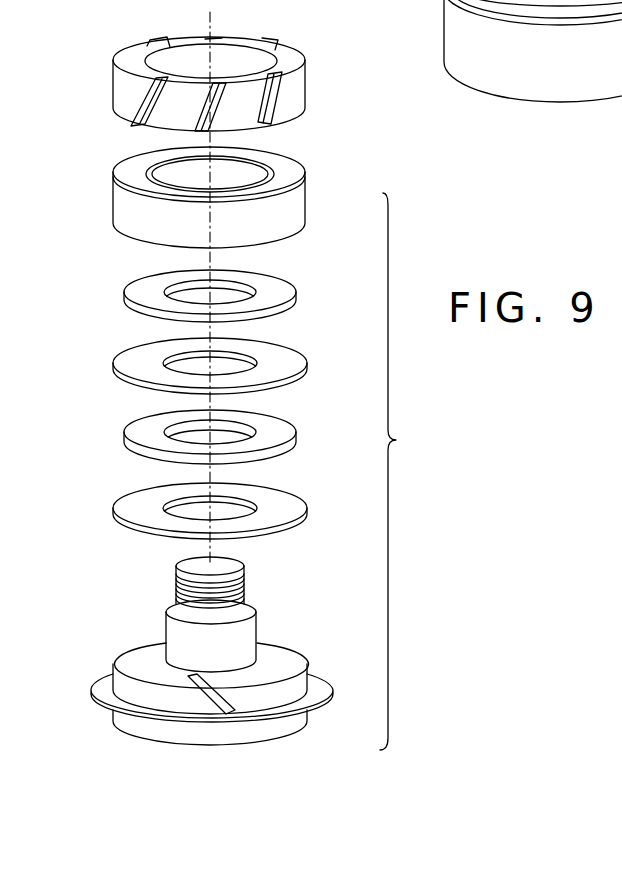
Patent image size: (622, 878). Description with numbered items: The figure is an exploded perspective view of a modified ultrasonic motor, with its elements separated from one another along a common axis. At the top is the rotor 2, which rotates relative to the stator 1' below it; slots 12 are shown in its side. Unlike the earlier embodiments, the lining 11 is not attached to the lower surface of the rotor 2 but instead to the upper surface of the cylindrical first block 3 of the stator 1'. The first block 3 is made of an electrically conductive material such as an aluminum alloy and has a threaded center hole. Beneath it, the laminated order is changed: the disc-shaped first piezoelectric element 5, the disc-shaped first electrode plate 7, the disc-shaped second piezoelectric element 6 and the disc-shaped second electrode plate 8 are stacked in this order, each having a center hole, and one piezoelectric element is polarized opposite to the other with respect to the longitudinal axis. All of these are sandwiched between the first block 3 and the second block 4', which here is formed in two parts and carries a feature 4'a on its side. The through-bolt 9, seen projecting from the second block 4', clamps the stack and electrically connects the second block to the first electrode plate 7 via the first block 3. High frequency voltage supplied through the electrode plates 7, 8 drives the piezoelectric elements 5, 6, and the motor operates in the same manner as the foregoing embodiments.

The stator 1' is at (401, 471).
The rotor 2 is at (244, 84).
The slots 12 is at (270, 100).
The lining 11 is at (288, 165).
The first block 3 is at (244, 194).
The first piezoelectric element 5 is at (282, 287).
The first electrode plate 7 is at (282, 360).
The second piezoelectric element 6 is at (278, 430).
The second electrode plate 8 is at (282, 500).
The through-bolt 9 is at (242, 637).
The second block 4' is at (236, 677).
The slot 4'a is at (285, 694).